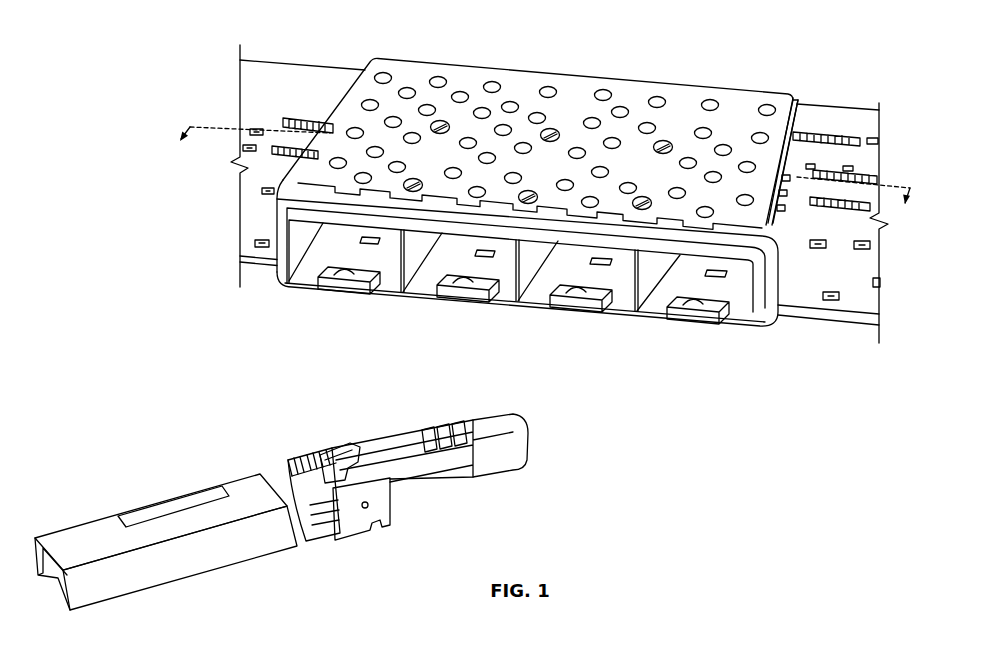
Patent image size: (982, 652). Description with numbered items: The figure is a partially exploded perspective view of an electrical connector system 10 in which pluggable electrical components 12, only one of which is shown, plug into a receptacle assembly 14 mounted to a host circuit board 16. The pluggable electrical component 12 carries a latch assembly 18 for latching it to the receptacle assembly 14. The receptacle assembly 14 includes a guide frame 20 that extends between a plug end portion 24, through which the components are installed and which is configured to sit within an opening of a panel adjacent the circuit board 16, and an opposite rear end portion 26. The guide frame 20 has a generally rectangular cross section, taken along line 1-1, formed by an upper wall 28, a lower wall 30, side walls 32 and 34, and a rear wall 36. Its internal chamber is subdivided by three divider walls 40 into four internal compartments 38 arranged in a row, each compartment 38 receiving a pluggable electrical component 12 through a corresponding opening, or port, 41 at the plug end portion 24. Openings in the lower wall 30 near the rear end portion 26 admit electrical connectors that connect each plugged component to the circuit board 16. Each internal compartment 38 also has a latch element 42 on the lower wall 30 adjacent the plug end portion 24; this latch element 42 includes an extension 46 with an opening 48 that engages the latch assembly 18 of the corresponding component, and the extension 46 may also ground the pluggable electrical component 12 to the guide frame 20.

The electrical connector system 10 is at (782, 25).
The pluggable electrical component 12 is at (157, 481).
The receptacle assembly 14 is at (276, 304).
The host circuit board 16 is at (857, 120).
The latch assembly 18 is at (339, 431).
The guide frame 20 is at (687, 87).
The plug end portion 24 is at (659, 338).
The rear end portion 26 is at (773, 85).
The upper wall 28 is at (468, 80).
The lower wall 30 is at (423, 288).
The side wall 32 is at (350, 100).
The side wall 34 is at (800, 113).
The rear wall 36 is at (618, 82).
The internal compartment 38 is at (386, 279).
The divider wall 40 is at (510, 298).
The opening 41 is at (298, 243).
The latch element 42 is at (558, 321).
The extension 46 is at (588, 313).
The opening 48 is at (581, 297).
The line 1- 1 is at (542, 177).